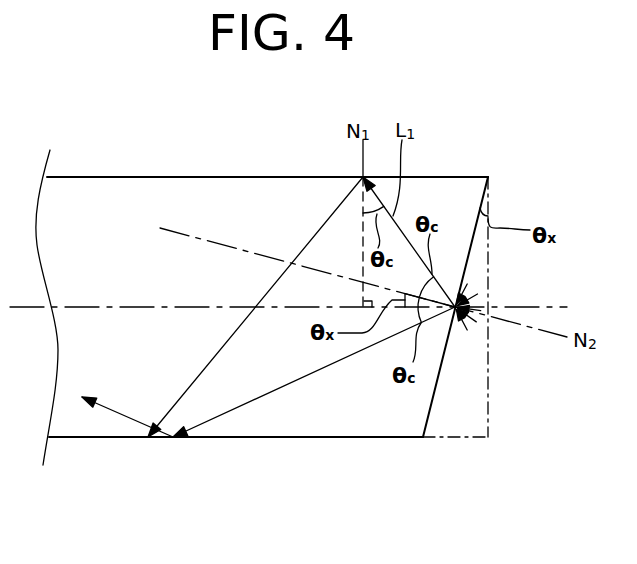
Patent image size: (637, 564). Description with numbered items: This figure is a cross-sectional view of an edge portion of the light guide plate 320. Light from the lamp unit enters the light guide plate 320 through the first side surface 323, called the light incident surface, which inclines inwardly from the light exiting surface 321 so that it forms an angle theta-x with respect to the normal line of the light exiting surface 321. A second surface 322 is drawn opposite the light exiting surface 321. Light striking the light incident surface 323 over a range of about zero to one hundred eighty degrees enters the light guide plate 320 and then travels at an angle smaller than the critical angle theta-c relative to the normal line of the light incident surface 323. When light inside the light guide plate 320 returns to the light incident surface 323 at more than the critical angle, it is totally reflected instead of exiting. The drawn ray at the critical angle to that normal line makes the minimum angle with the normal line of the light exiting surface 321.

The light guide plate 320 is at (305, 293).
The light exiting surface 321 is at (276, 177).
The lower surface of light guide plate 322 is at (277, 438).
The light incident surface 323 is at (438, 375).